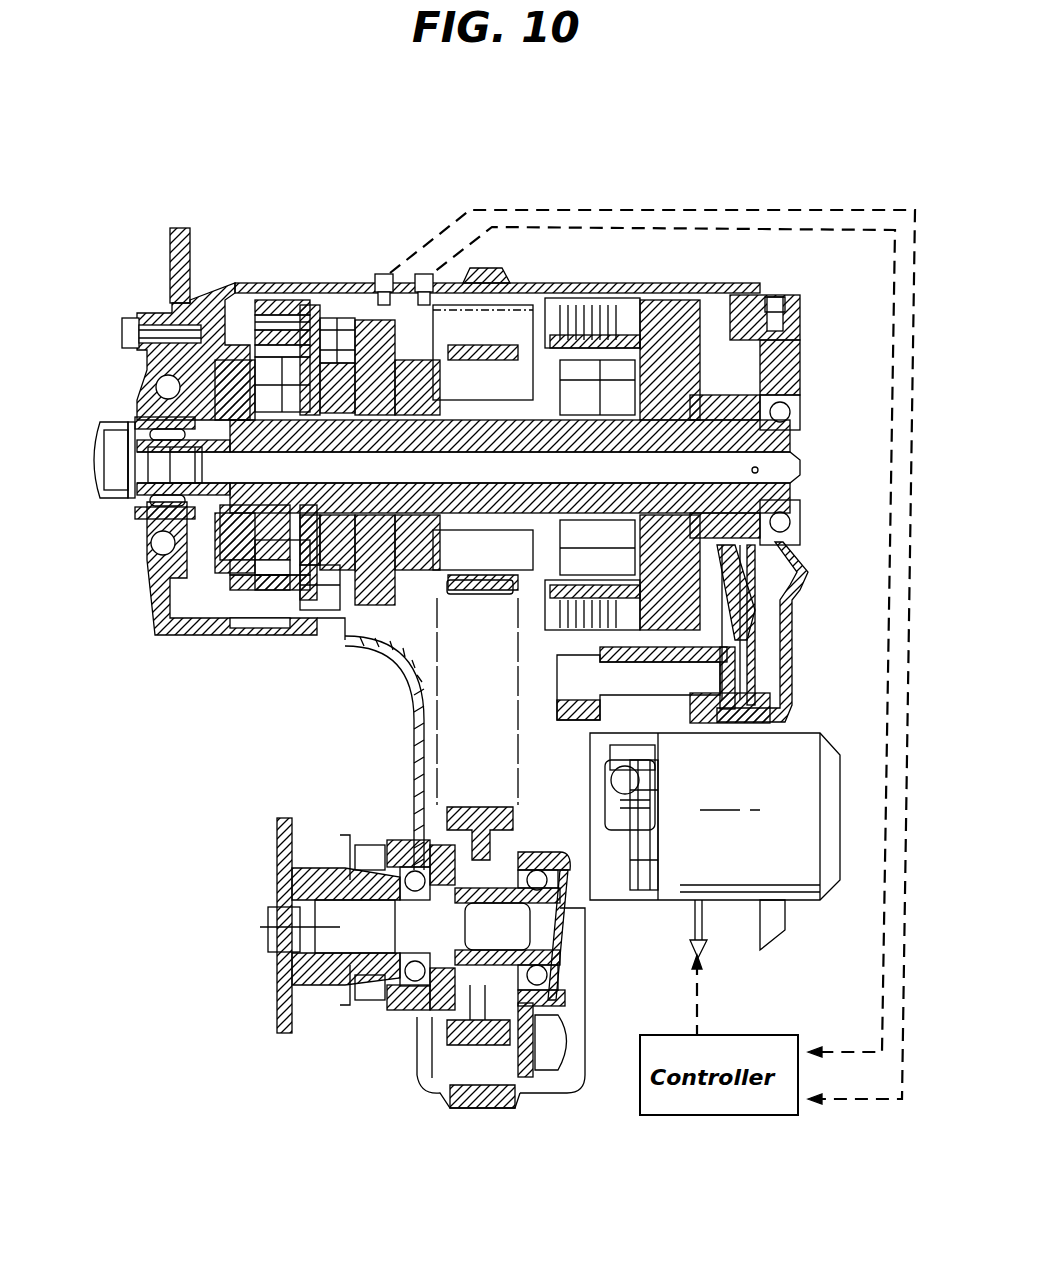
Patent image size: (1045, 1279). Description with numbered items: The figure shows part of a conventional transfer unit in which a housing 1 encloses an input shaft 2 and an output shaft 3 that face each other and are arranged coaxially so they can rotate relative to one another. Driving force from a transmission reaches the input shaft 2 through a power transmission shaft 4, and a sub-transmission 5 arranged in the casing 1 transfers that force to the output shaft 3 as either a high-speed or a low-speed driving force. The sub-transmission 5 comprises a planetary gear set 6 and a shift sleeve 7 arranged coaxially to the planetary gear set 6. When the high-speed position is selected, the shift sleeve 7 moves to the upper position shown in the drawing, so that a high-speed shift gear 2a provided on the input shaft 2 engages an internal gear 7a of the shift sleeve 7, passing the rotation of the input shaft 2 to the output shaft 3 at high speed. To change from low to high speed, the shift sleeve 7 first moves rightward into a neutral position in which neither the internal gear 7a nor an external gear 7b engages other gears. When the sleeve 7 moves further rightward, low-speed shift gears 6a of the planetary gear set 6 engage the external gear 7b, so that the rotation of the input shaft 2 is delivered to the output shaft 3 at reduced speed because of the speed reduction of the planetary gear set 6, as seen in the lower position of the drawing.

The housing 1 is at (465, 544).
The input shaft 2 is at (100, 418).
The high-speed shift gear 2a is at (318, 600).
The output shaft 3 is at (795, 455).
The power transmission shaft 4 is at (105, 470).
The sub-transmission 5 is at (330, 315).
The planetary gear set 6 is at (240, 278).
The low-speed shift gears 6a is at (330, 605).
The shift sleeve 7 is at (370, 320).
The internal gear 7a is at (300, 300).
The external gear 7b is at (372, 615).